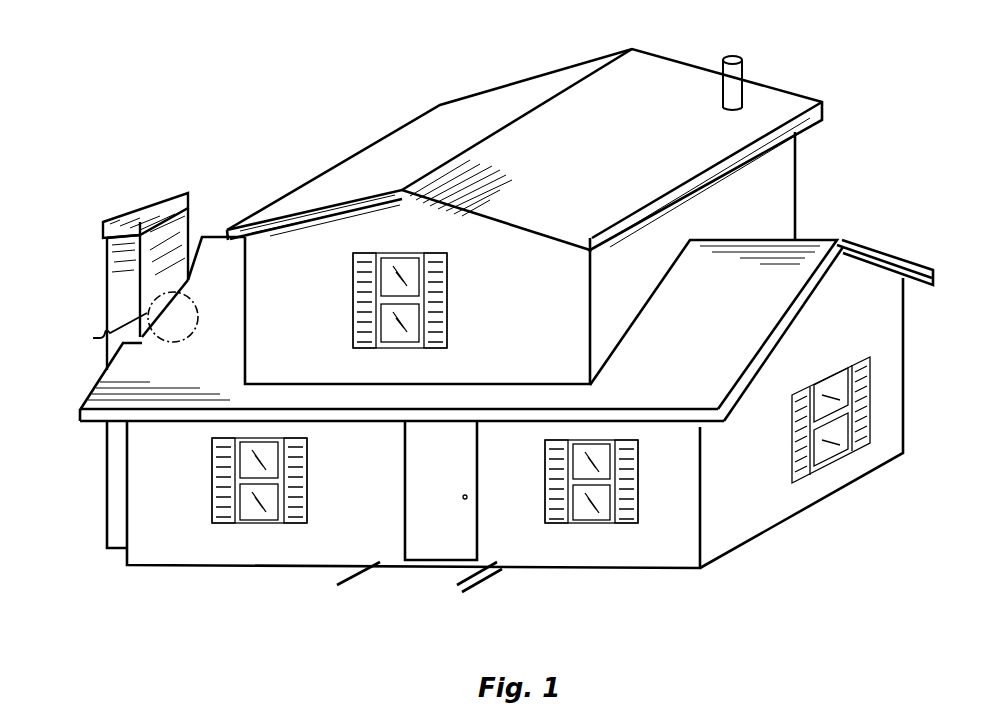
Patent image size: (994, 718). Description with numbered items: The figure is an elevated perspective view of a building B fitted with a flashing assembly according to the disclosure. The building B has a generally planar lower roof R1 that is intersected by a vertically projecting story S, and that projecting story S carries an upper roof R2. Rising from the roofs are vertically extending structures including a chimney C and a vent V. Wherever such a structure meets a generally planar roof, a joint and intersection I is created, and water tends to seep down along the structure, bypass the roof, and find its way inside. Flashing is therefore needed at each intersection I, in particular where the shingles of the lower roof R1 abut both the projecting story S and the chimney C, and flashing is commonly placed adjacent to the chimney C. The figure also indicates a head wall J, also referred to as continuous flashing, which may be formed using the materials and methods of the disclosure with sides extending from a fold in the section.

The building B is at (475, 301).
The chimney C is at (120, 293).
The vent V is at (733, 73).
The intersection I is at (722, 108).
The head wall J is at (285, 375).
The lower roof R1 is at (506, 329).
The upper roof R2 is at (524, 150).
The projecting story S is at (520, 258).